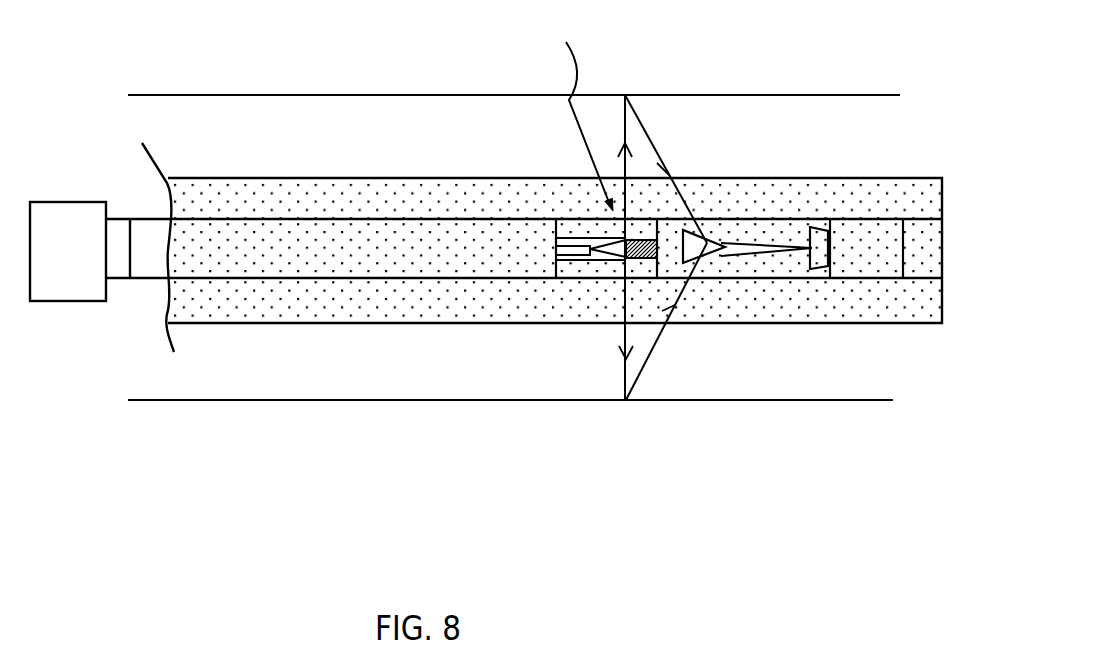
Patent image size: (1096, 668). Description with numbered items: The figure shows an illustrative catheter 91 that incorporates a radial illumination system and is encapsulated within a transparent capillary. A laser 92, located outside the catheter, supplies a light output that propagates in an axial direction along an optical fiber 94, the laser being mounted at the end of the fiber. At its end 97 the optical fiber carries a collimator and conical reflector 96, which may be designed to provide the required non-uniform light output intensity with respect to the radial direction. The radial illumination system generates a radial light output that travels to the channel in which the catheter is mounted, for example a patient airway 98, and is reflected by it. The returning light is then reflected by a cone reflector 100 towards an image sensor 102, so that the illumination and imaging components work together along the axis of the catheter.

The catheter 91 is at (203, 178).
The laser 92 is at (75, 202).
The optical fiber 94 is at (264, 219).
The collimator and conical reflector 96 is at (646, 230).
The end of the optical fiber 97 is at (583, 113).
The patient airway 98 is at (498, 95).
The cone reflector 100 is at (702, 233).
The image sensor 102 is at (822, 227).